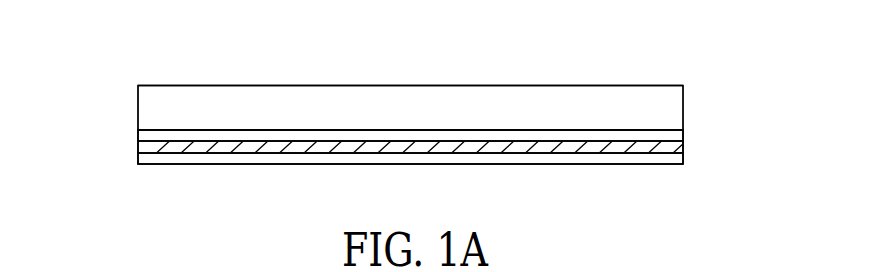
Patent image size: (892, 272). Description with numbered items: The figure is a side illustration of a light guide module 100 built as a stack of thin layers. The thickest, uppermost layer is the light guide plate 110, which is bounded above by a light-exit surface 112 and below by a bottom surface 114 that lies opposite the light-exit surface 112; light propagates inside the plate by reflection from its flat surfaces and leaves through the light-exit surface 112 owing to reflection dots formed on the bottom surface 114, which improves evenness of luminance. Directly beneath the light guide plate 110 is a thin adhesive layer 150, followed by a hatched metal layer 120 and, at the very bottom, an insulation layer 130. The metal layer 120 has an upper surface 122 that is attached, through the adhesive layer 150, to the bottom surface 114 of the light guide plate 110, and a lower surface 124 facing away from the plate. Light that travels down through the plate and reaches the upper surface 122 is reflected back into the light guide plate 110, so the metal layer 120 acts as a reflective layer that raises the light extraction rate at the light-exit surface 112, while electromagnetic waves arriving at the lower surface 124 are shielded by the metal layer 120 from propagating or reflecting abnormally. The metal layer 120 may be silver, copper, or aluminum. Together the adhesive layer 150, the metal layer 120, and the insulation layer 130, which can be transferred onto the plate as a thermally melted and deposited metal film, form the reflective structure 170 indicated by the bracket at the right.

The light guide module 100 is at (135, 36).
The light guide plate 110 is at (674, 100).
The light-exit surface 112 is at (522, 83).
The bottom surface 114 is at (173, 129).
The metal layer 120 is at (679, 147).
The upper surface 122 is at (150, 137).
The lower surface 124 is at (138, 156).
The insulation layer 130 is at (679, 160).
The adhesive layer 150 is at (679, 135).
The reflective structure 170 is at (755, 115).